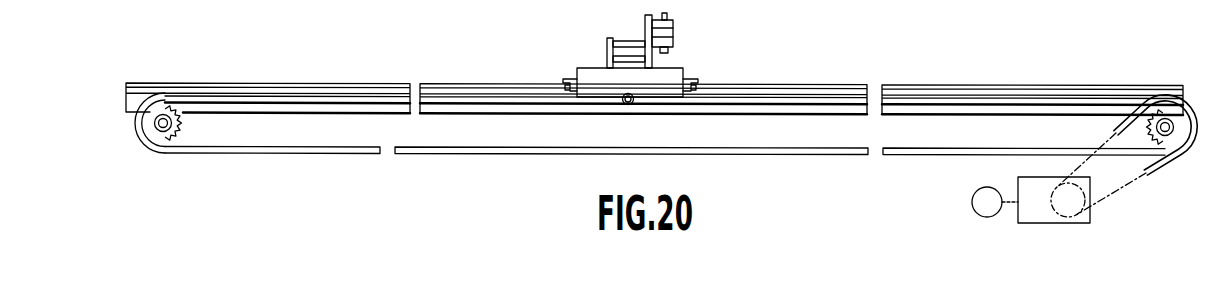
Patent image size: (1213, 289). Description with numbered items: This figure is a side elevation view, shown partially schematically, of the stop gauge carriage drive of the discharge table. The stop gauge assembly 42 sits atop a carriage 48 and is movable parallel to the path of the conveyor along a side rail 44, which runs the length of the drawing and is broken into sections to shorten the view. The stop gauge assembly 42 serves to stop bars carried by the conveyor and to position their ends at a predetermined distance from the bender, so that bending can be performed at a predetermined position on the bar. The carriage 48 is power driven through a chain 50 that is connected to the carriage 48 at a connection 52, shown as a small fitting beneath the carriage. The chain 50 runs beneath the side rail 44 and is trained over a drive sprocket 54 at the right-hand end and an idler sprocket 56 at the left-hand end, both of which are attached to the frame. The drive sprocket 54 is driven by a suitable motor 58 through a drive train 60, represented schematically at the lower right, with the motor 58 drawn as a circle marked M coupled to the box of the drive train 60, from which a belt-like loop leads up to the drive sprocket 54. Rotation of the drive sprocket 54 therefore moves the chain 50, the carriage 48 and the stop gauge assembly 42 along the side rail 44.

The stop gauge assembly 42 is at (631, 27).
The side rail 44 is at (837, 85).
The carriage 48 is at (673, 78).
The chain 50 is at (760, 99).
The connection 52 is at (632, 105).
The drive sprocket 54 is at (1168, 150).
The idler sprocket 56 is at (168, 142).
The motor 58 is at (972, 210).
The drive train 60 is at (1038, 226).